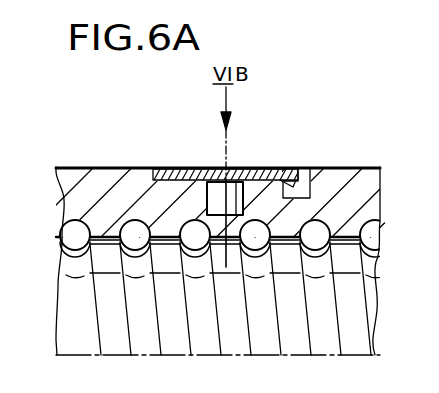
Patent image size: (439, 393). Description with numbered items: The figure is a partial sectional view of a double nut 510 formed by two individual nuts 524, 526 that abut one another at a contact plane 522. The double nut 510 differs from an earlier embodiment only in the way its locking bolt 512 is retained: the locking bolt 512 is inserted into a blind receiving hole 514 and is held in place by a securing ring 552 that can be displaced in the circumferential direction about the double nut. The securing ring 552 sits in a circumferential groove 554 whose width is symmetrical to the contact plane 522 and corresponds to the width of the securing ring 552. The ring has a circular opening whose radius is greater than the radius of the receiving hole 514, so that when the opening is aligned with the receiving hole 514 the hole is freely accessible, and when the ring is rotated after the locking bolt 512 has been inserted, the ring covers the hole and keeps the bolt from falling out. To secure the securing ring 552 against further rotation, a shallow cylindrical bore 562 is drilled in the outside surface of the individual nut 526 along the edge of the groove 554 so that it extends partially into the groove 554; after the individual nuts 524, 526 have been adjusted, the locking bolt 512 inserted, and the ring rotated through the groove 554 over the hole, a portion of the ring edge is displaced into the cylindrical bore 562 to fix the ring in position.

The double nut 510 is at (325, 114).
The locking bolt 512 is at (201, 207).
The receiving hole 514 is at (193, 168).
The contact plane 522 is at (233, 148).
The individual nut 524 is at (76, 182).
The individual nut 526 is at (360, 175).
The securing ring 552 is at (211, 190).
The circumferential groove 554 is at (245, 187).
The cylindrical bore 562 is at (307, 185).